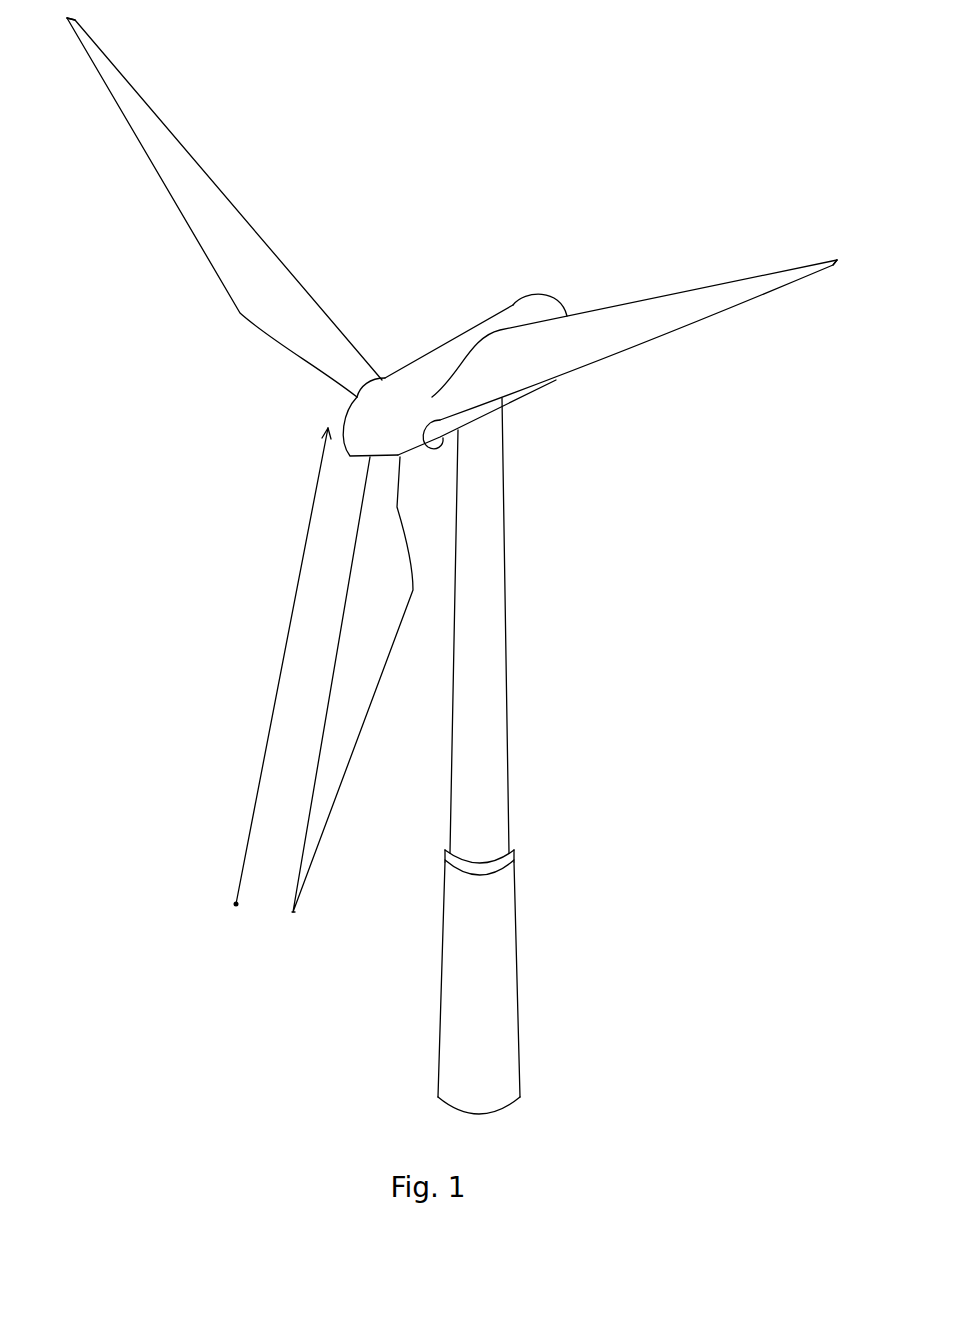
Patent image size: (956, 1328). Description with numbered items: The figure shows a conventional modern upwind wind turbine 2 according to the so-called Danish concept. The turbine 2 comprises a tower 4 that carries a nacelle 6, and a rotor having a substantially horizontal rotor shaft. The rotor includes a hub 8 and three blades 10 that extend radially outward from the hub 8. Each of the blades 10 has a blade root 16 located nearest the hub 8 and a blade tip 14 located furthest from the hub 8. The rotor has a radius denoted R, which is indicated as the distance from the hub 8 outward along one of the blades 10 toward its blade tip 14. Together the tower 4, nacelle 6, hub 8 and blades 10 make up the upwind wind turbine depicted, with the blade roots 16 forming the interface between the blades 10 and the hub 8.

The wind turbine 2 is at (452, 566).
The tower 4 is at (497, 633).
The nacelle 6 is at (432, 356).
The hub 8 is at (322, 430).
The blades 10 is at (240, 312).
The blade tip 14 is at (117, 70).
The blade root 16 is at (347, 413).
The radius R is at (283, 667).